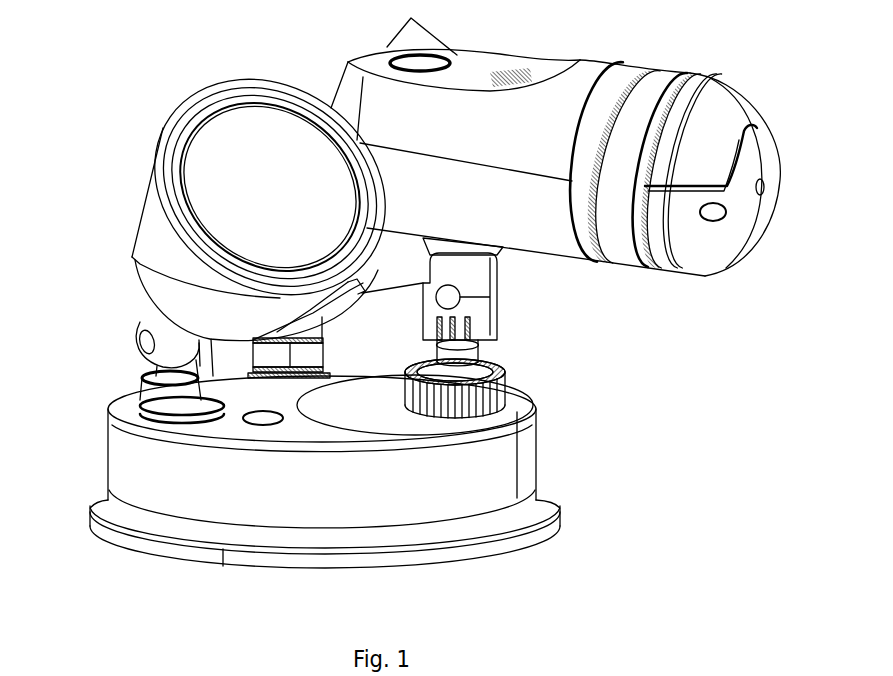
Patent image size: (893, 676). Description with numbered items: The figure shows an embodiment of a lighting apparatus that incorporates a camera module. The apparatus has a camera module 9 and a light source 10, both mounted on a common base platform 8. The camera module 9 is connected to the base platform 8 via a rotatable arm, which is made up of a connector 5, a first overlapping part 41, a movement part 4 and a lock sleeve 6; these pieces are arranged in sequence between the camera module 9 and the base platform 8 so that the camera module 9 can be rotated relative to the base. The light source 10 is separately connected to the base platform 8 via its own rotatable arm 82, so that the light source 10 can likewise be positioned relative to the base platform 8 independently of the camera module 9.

The movement part 4 is at (469, 356).
The connector 5 is at (483, 251).
The lock sleeve 6 is at (503, 402).
The base platform 8 is at (113, 474).
The camera module 9 is at (576, 69).
The light source 10 is at (147, 208).
The first overlapping part 41 is at (473, 306).
The rotatable arm 82 is at (163, 393).